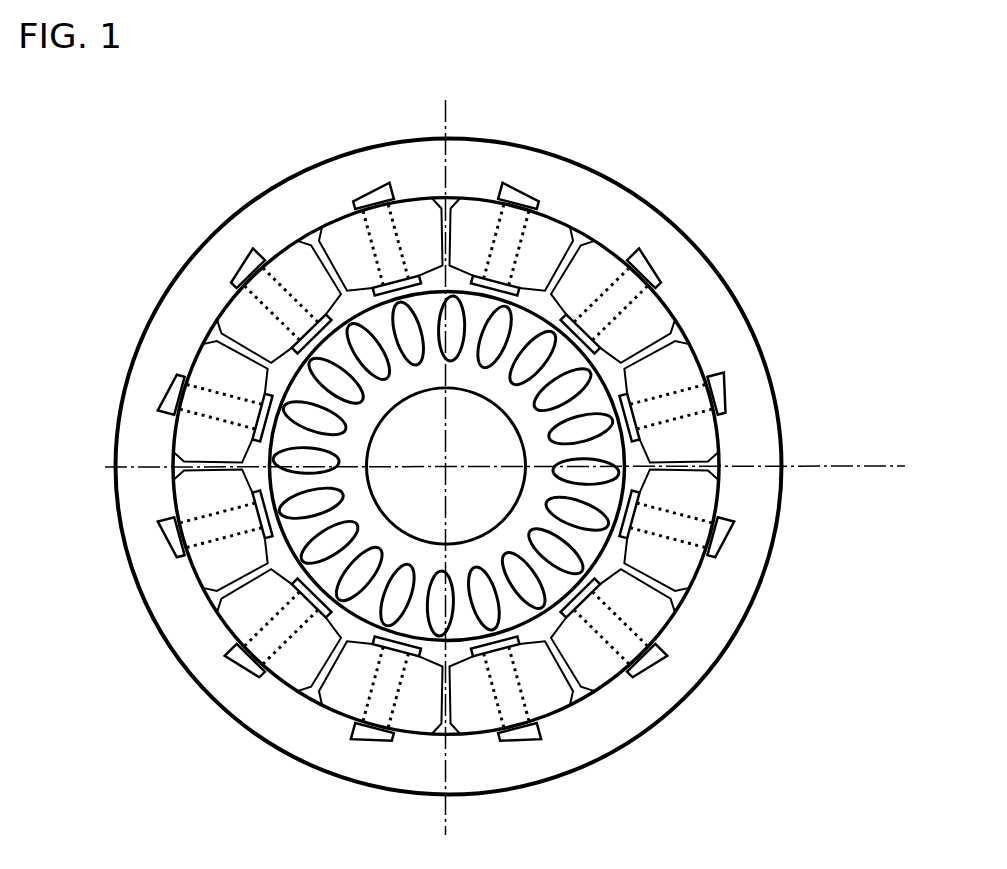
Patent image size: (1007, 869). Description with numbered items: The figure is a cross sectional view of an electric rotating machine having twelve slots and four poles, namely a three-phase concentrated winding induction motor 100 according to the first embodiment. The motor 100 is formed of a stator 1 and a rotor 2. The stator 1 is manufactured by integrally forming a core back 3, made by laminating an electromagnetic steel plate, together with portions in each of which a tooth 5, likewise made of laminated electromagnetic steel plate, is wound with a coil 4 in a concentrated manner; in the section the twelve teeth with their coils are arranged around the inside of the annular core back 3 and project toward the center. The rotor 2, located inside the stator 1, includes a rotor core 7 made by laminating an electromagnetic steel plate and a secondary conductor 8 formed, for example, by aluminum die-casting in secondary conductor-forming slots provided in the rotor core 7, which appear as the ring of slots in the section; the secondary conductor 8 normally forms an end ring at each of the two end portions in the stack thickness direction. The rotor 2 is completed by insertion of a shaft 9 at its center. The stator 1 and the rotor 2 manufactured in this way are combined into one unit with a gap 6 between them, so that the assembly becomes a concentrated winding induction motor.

The three-phase concentrated winding induction motor 100 is at (727, 109).
The stator 1 is at (585, 220).
The rotor 2 is at (605, 440).
The core back 3 is at (700, 292).
The coil 4 is at (672, 365).
The tooth 5 is at (683, 523).
The gap 6 is at (660, 615).
The rotor core 7 is at (252, 435).
The secondary conductor 8 is at (298, 527).
The shaft 9 is at (412, 418).